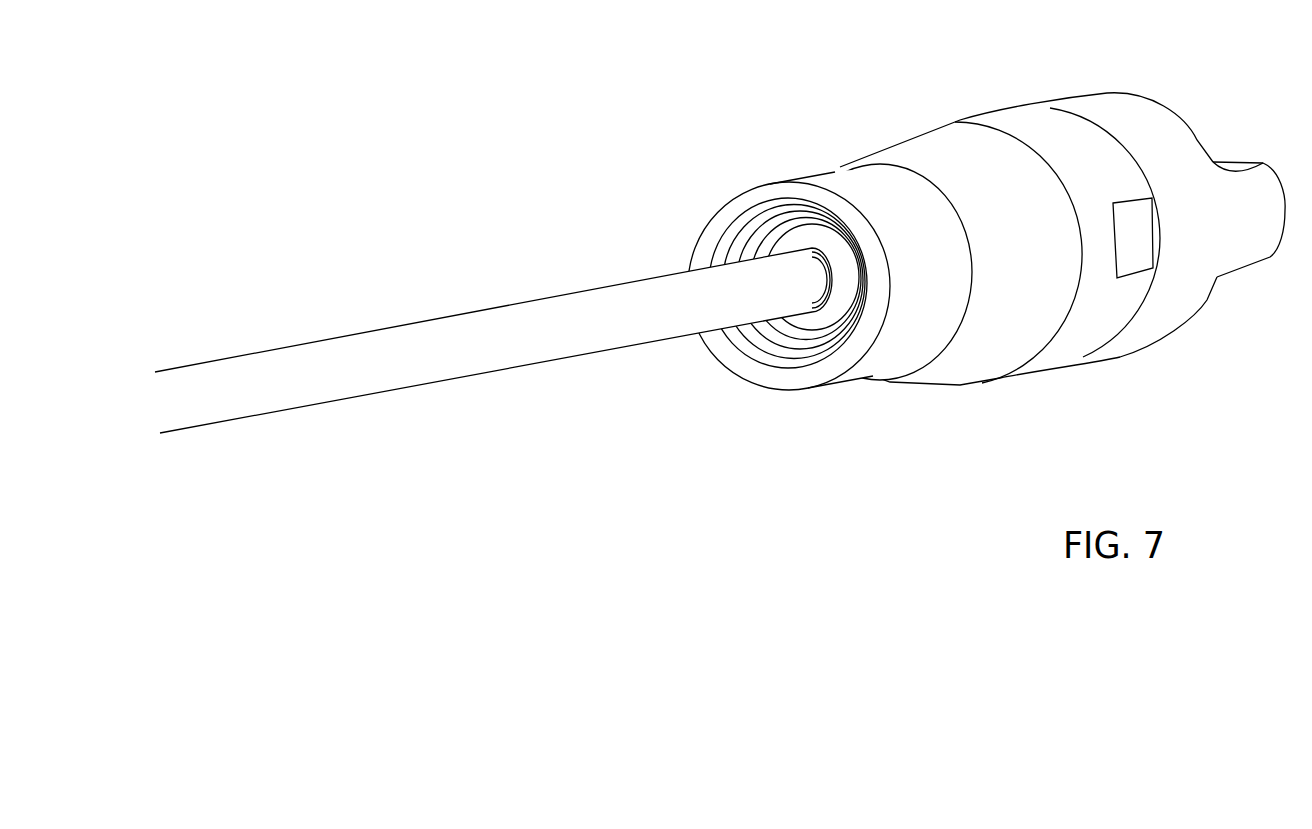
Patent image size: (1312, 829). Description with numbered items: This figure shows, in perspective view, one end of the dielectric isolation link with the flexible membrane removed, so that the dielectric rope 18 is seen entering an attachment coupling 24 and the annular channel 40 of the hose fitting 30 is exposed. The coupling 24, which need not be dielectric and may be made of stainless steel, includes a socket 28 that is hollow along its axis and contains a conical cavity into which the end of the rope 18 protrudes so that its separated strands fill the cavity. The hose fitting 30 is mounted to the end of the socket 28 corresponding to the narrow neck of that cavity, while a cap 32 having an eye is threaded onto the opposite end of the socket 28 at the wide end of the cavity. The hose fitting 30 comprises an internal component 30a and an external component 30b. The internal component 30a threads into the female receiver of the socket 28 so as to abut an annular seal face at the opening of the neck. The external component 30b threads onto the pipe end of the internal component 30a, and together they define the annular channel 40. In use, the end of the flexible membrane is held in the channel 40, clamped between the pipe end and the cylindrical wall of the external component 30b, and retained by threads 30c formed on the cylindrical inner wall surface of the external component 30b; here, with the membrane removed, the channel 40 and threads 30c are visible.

The dielectric rope 18 is at (513, 303).
The attachment coupling 24 is at (1049, 63).
The socket 28 is at (1025, 392).
The hose fitting 30 is at (767, 143).
The internal component 30a is at (862, 360).
The external component 30b is at (902, 350).
The threads 30c is at (742, 347).
The cap 32 is at (1169, 356).
The annular channel 40 is at (816, 342).